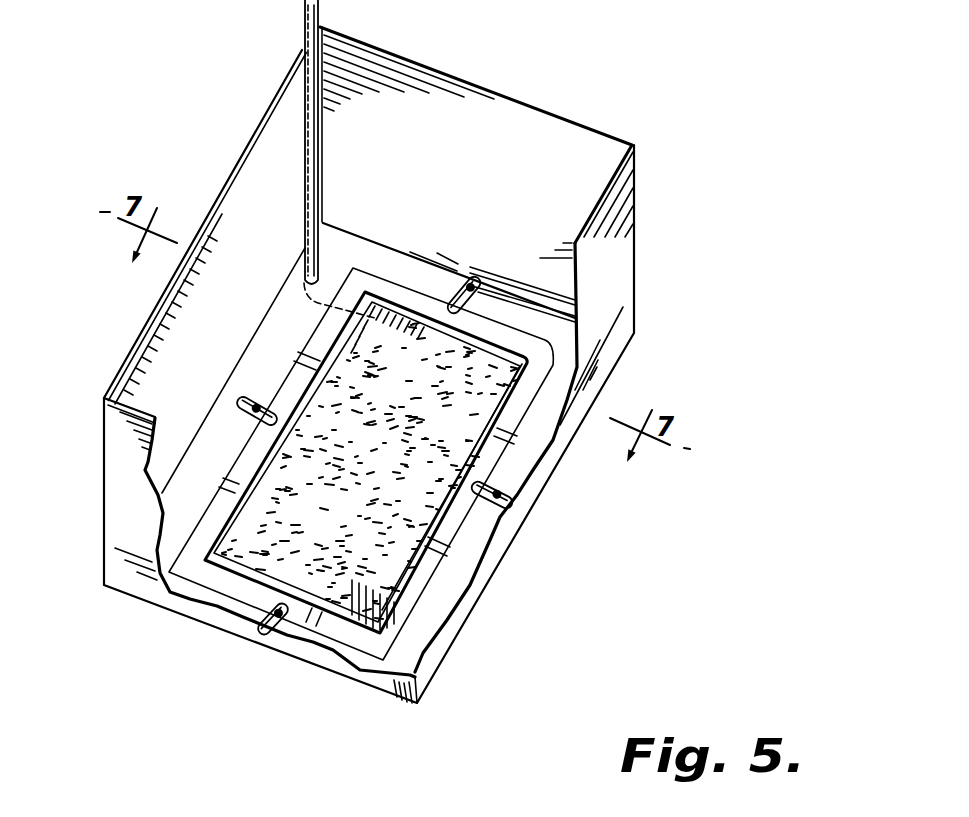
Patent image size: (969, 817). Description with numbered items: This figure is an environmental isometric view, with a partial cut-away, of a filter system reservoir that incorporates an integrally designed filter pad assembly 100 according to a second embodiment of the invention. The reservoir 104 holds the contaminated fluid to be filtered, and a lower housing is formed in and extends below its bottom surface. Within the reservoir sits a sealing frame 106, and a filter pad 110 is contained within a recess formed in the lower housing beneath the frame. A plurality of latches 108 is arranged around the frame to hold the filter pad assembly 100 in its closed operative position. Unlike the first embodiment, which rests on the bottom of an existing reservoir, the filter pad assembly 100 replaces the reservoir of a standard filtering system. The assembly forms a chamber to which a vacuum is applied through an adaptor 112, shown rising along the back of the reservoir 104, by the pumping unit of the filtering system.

The filter pad assembly 100 is at (676, 126).
The reservoir 104 is at (493, 87).
The sealing frame 106 is at (407, 598).
The latches 108 is at (472, 283).
The filter pad 110 is at (345, 618).
The adaptor 112 is at (303, 17).